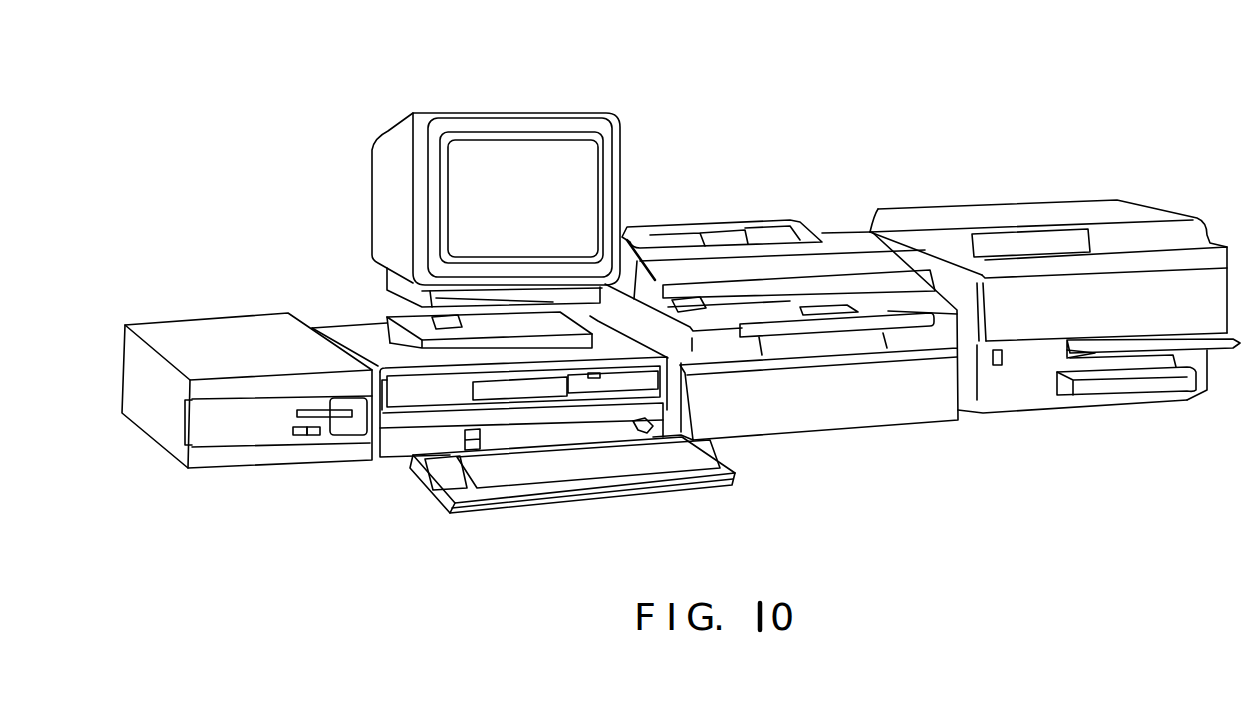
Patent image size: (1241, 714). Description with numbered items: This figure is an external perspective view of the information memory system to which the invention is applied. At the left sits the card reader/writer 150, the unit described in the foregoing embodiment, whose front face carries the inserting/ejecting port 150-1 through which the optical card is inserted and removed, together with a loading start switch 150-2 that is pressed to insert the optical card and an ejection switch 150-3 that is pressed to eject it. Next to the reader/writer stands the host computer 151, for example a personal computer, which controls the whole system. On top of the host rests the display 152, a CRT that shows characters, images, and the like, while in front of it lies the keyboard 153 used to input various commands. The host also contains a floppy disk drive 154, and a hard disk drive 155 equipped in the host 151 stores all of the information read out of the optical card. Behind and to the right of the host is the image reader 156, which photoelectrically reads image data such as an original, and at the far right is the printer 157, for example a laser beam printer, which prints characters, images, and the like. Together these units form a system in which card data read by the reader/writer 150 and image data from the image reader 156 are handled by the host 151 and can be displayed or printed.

The card reader/writer 150 is at (260, 423).
The inserting/ejecting port 150-1 is at (297, 413).
The loading start switch 150-2 is at (300, 437).
The ejection switch 150-3 is at (313, 437).
The host computer 151 is at (569, 384).
The display 152 is at (520, 112).
The keyboard 153 is at (607, 497).
The floppy disk drive 154 is at (653, 382).
The hard disk drive 155 is at (413, 403).
The image reader 156 is at (762, 238).
The printer 157 is at (1020, 200).